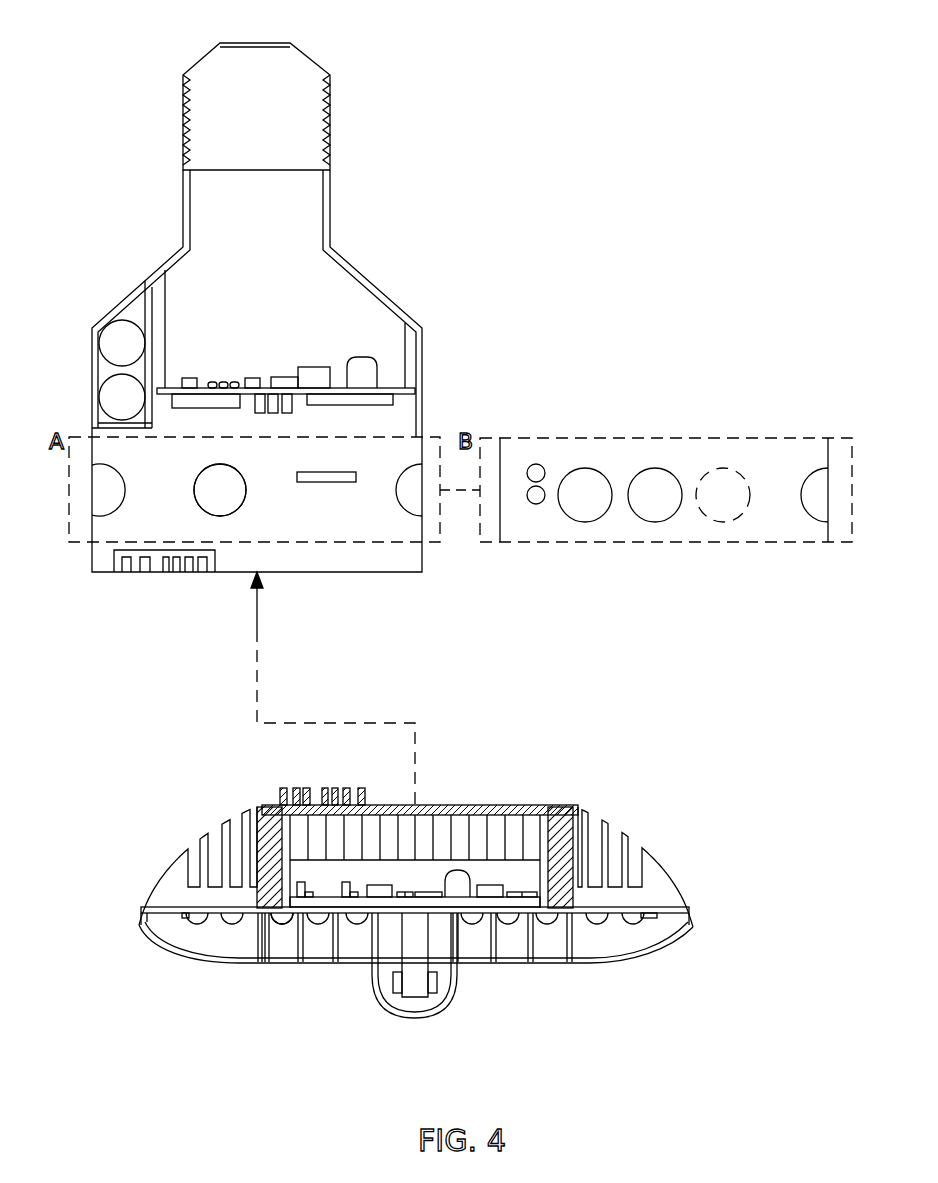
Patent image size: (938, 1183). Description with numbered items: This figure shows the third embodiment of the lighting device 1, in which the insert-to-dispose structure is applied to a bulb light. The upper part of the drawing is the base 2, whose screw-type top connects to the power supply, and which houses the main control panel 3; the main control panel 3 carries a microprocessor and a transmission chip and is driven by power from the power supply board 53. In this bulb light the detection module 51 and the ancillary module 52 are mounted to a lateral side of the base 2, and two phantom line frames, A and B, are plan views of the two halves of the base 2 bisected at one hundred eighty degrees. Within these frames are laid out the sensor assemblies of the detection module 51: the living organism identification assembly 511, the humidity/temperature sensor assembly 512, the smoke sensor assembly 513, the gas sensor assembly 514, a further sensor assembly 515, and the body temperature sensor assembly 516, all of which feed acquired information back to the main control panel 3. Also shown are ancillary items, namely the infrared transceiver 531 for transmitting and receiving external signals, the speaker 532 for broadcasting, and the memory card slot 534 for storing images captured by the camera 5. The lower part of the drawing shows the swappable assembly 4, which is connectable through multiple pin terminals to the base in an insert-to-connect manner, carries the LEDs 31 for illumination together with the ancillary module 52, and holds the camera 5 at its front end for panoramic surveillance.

The lighting device 1 is at (152, 50).
The base 2 is at (100, 576).
The main control panel 3 is at (198, 387).
The swappable assembly 4 is at (688, 876).
The camera 5 is at (413, 998).
The light-emitting diodes 31 is at (232, 924).
The detection module 51 is at (188, 478).
The ancillary module 52 is at (285, 935).
The power supply board 53 is at (153, 573).
The living organism identification assembly 511 is at (732, 467).
The humidity/temperature sensor assembly 512 is at (571, 473).
The smoke sensor assembly 513 is at (807, 476).
The gas sensor assembly 514 is at (100, 489).
The sensor port 515 is at (193, 487).
The body temperature sensor assembly 516 is at (653, 476).
The infrared transceiver 531 is at (534, 505).
The speaker 532 is at (418, 483).
The memory card slot 534 is at (322, 482).